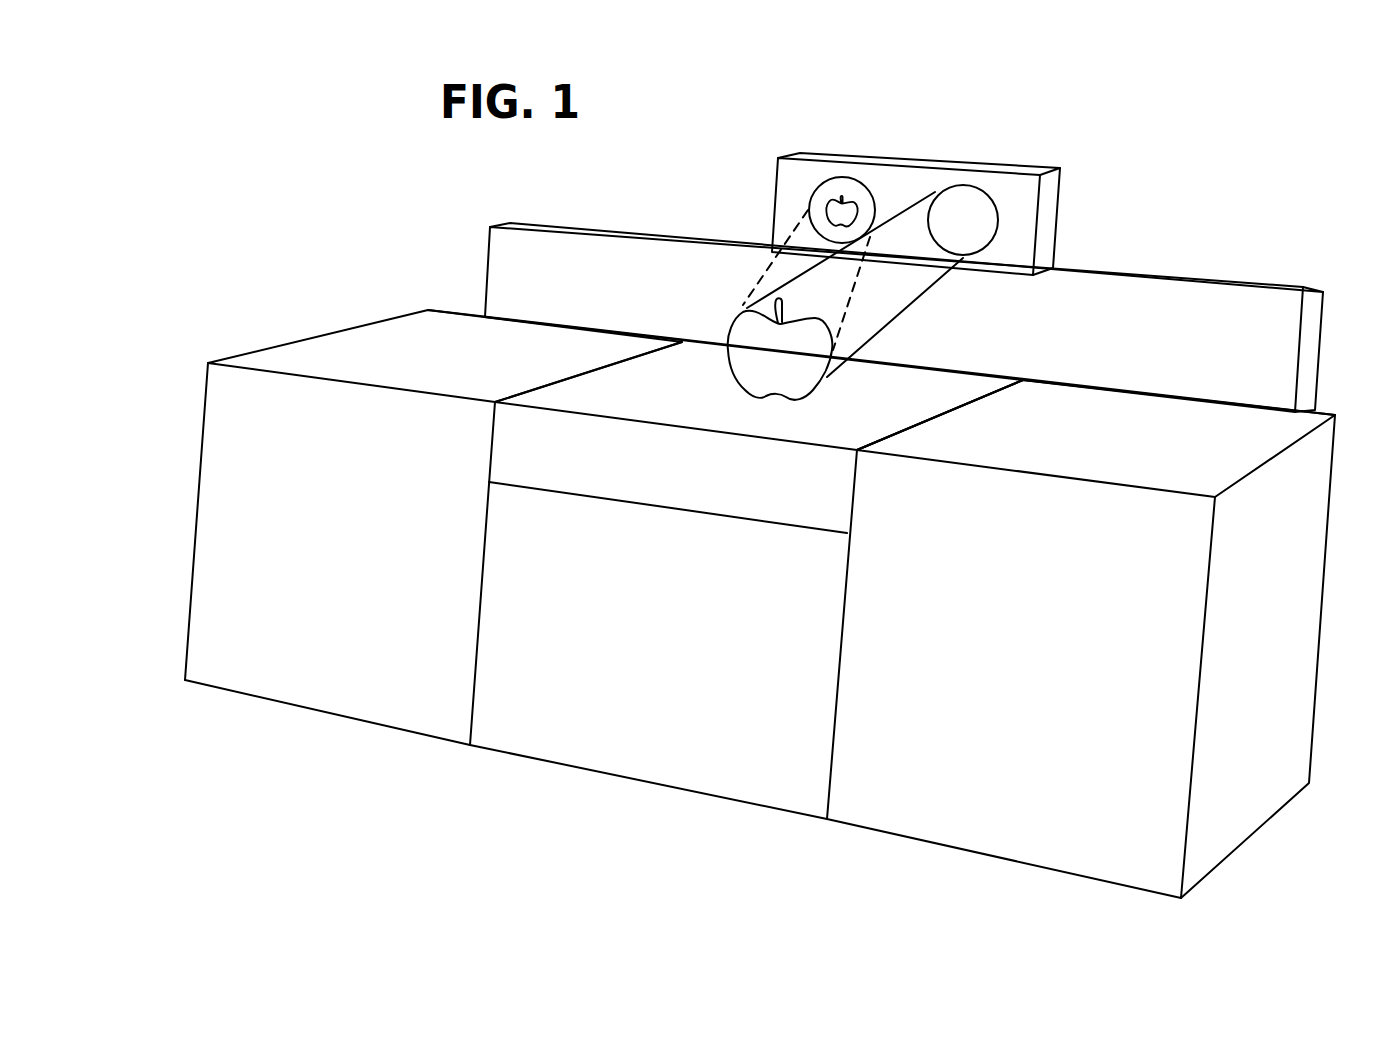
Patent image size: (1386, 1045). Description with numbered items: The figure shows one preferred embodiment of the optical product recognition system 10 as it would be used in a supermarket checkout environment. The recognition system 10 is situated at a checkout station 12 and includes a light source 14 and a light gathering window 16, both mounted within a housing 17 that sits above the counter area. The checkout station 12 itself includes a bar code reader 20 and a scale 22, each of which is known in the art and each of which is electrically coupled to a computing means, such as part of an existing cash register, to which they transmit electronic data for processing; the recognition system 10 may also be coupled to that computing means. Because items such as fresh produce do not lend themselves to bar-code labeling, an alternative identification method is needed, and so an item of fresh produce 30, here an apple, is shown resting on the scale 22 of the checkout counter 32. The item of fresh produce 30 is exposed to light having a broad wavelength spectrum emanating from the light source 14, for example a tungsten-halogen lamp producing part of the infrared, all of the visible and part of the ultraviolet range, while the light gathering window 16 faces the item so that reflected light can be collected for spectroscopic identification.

The product recognition system 10 is at (912, 216).
The checkout station 12 is at (760, 604).
The light source 14 is at (1010, 214).
The light gathering window 16 is at (800, 187).
The housing 17 is at (1028, 165).
The bar code reader 20 is at (605, 314).
The scale 22 is at (756, 437).
The item of fresh produce 30 is at (807, 382).
The checkout counter 32 is at (327, 530).